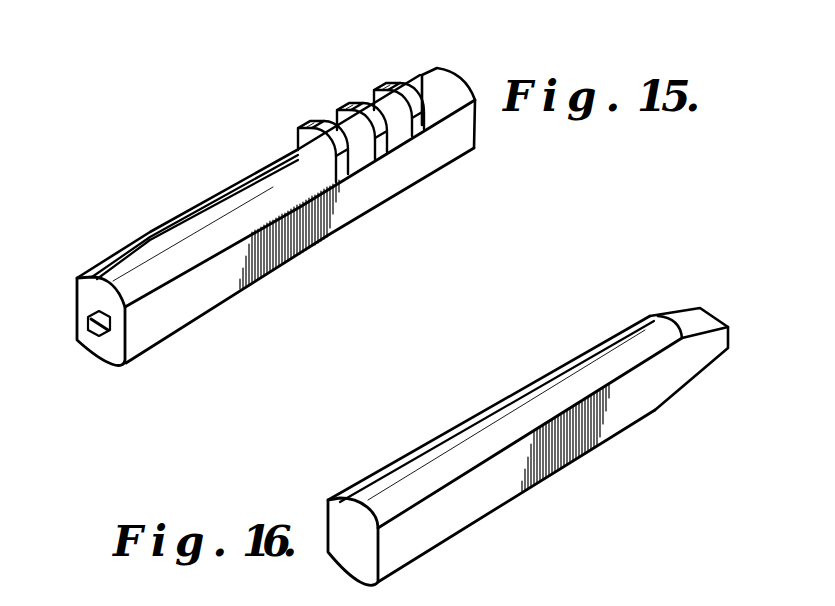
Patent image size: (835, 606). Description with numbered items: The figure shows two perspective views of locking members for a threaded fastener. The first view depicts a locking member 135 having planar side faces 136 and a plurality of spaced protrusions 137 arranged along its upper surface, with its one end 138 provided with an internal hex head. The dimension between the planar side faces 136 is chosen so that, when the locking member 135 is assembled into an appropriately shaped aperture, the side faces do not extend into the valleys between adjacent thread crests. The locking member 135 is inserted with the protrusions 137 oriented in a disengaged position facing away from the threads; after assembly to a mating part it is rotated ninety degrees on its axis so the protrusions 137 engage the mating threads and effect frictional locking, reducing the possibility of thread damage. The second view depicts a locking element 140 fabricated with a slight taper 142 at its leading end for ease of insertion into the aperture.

In FIG. 15, the locking member 135 is at (410, 192).
In FIG. 15, the planar side faces 136 is at (75, 297).
In FIG. 15, the spaced protrusions 137 is at (318, 127).
In FIG. 15, the one end 138 is at (105, 352).
In FIG. 16, the locking element 140 is at (585, 455).
In FIG. 16, the slight taper 142 is at (688, 310).